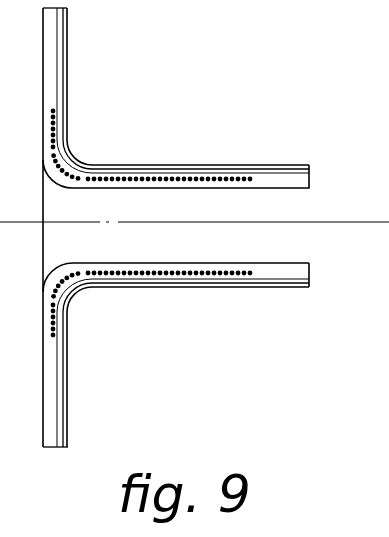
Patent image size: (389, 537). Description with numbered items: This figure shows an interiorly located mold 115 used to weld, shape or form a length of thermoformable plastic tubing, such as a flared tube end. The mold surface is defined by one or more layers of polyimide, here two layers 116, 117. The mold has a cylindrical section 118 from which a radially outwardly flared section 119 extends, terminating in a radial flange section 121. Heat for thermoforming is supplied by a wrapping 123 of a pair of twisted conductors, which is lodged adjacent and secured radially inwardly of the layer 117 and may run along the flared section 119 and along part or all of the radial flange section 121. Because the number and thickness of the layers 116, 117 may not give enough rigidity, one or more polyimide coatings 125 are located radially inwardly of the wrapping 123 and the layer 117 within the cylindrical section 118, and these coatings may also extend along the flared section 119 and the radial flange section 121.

The mold 115 is at (167, 351).
The layer 116 is at (310, 288).
The layer 117 is at (310, 284).
The cylindrical section 118 is at (176, 164).
The radially outwardly flared section 119 is at (86, 161).
The radial flange section 121 is at (63, 41).
The wrapping 123 is at (130, 270).
The coatings 125 is at (275, 263).